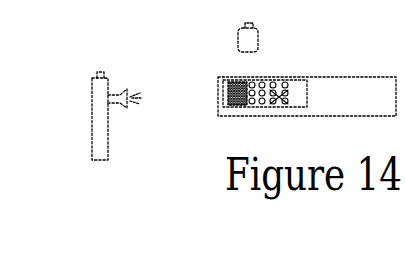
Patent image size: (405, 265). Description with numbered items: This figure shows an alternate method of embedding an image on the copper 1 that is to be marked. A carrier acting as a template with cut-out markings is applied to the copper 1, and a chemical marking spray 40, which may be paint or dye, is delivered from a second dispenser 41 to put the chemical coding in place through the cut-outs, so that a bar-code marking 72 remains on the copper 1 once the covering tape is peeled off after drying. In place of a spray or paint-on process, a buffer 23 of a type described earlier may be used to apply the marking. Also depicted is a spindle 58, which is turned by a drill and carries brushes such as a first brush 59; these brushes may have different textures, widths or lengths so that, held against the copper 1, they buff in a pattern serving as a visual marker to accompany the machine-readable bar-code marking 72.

The copper 1 is at (328, 82).
The buffer 23 is at (258, 40).
The marking spray 40 is at (131, 113).
The second dispenser 41 is at (100, 103).
The spindle 58 is at (238, 42).
The first brush 59 is at (248, 22).
The bar-code marking 72 is at (228, 85).